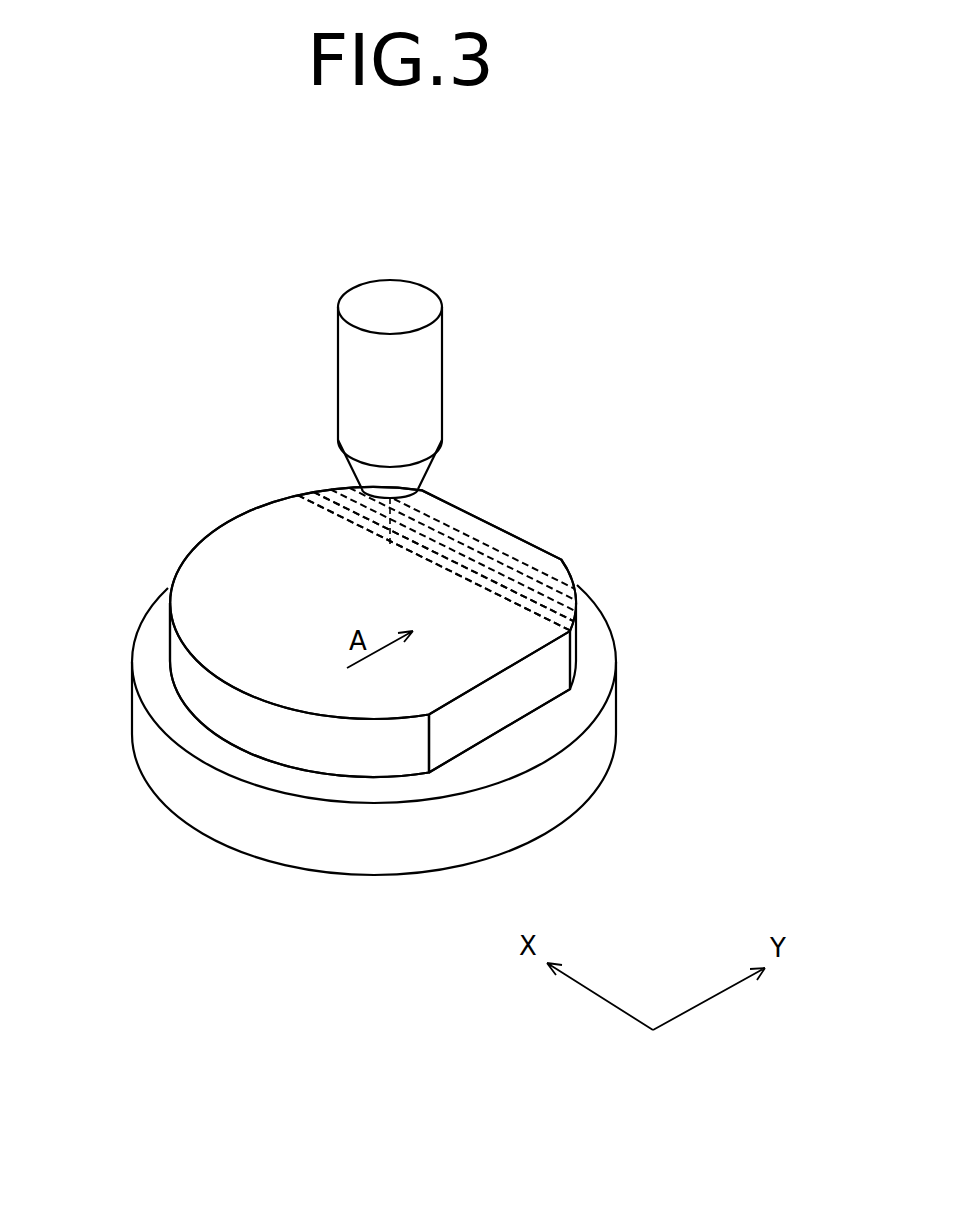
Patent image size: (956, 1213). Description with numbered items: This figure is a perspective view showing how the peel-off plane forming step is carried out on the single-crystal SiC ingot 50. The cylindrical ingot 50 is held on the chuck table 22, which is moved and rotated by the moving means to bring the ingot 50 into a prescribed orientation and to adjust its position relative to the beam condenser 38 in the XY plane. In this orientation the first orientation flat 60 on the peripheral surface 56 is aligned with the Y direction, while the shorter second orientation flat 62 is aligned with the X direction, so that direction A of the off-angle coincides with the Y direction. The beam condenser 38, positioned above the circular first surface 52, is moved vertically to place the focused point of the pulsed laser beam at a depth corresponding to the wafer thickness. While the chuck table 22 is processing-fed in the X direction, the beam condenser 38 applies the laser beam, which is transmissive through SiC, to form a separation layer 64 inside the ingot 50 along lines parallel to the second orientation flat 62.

The chuck table 22 is at (535, 827).
The beam condenser 38 is at (427, 388).
The single-crystal SiC ingot 50 is at (223, 518).
The first surface 52 is at (205, 577).
The peripheral surface 56 is at (203, 690).
The first orientation flat 60 is at (523, 698).
The second orientation flat 62 is at (497, 522).
The separation layer 64 is at (537, 591).